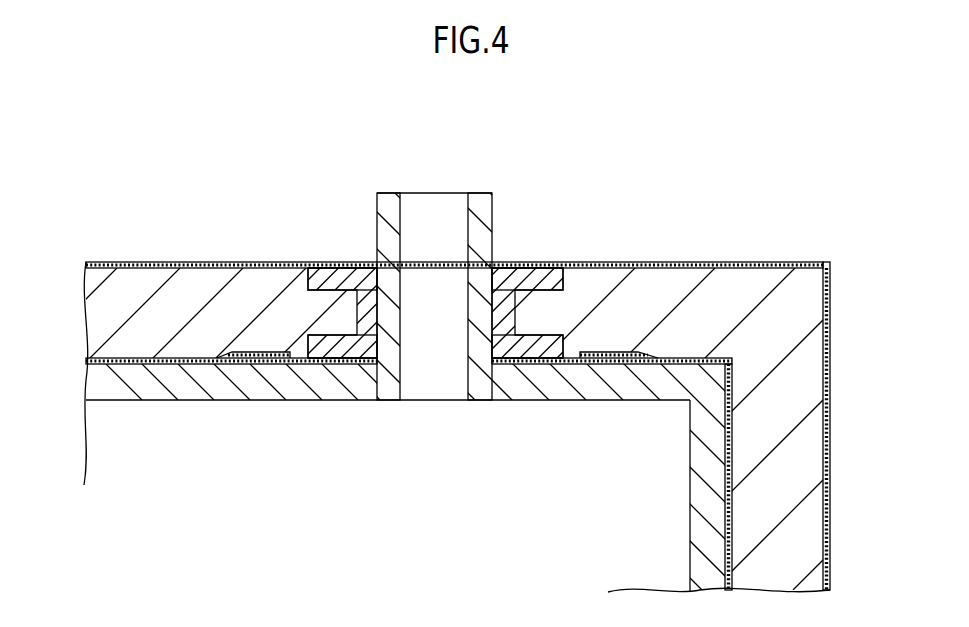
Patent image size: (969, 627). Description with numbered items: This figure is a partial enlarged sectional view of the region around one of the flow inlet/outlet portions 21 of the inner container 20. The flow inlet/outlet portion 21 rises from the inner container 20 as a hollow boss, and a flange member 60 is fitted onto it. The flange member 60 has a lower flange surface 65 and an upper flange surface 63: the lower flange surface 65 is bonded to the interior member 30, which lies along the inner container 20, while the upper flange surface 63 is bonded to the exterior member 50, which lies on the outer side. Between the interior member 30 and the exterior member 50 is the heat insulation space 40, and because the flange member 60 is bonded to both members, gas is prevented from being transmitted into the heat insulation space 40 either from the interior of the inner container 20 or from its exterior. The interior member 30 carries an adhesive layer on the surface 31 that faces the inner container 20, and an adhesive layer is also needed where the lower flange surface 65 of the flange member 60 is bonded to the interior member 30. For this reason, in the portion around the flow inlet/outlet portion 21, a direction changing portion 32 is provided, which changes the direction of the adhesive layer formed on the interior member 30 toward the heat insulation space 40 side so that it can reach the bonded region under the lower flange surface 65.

The inner container 20 is at (220, 390).
The flow inlet/outlet portion 21 is at (380, 197).
The interior member 30 is at (162, 367).
The surface 31 is at (122, 367).
The direction changing portion 32 is at (268, 372).
The heat insulation space 40 is at (135, 295).
The exterior member 50 is at (243, 260).
The flange member 60 is at (325, 350).
The upper flange surface 63 is at (330, 262).
The lower flange surface 65 is at (353, 363).